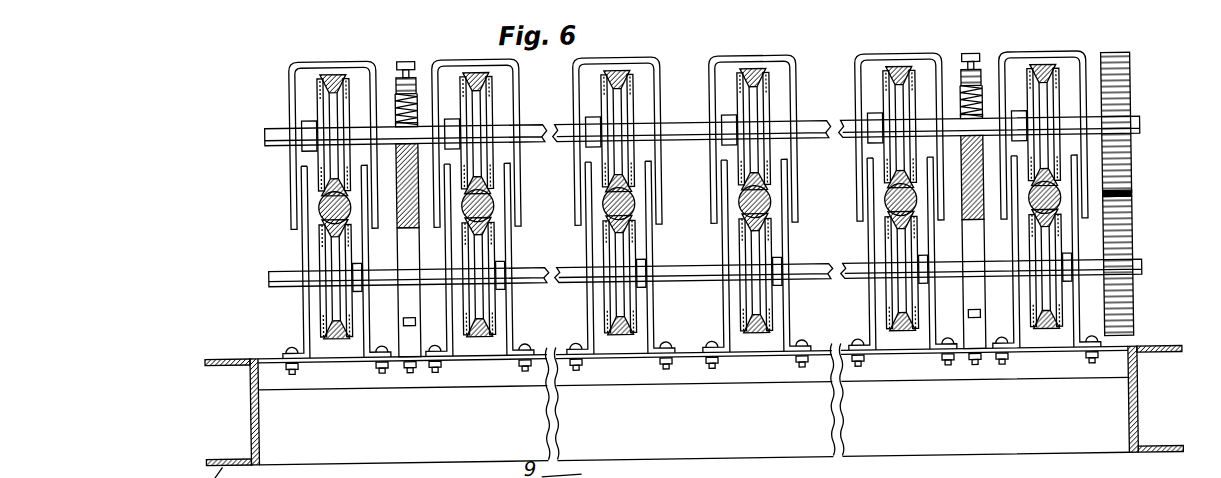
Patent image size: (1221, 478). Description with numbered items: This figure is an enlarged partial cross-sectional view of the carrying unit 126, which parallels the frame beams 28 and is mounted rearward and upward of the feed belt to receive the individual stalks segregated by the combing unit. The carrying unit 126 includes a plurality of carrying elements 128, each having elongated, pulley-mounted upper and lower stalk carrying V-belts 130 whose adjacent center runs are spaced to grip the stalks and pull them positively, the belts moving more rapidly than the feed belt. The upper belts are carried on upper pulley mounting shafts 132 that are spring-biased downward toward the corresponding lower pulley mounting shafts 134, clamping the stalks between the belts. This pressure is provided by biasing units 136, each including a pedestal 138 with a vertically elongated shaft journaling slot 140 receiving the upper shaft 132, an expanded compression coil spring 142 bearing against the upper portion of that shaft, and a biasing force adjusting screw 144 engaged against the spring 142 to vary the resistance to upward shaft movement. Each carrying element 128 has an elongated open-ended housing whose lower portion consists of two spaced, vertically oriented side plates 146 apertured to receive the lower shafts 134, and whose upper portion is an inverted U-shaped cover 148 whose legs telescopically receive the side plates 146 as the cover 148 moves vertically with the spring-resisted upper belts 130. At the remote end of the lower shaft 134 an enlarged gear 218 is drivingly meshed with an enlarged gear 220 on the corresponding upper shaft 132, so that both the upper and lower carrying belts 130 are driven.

The carrying unit 126 is at (271, 75).
The carrying element 128 is at (610, 195).
The stalk carrying V-belt 130 is at (340, 79).
The upper pulley mounting shaft 132 is at (283, 137).
The lower pulley mounting shaft 134 is at (291, 283).
The biasing unit 136 is at (721, 190).
The pedestal 138 is at (984, 267).
The shaft journaling slot 140 is at (989, 117).
The compression coil spring 142 is at (962, 110).
The biasing force adjusting screw 144 is at (976, 64).
The side plate 146 is at (593, 315).
The inverted U-shaped cover 148 is at (585, 176).
The enlarged gear 218 is at (1136, 260).
The enlarged gear 220 is at (1136, 173).
The frame beam 28 is at (1133, 424).